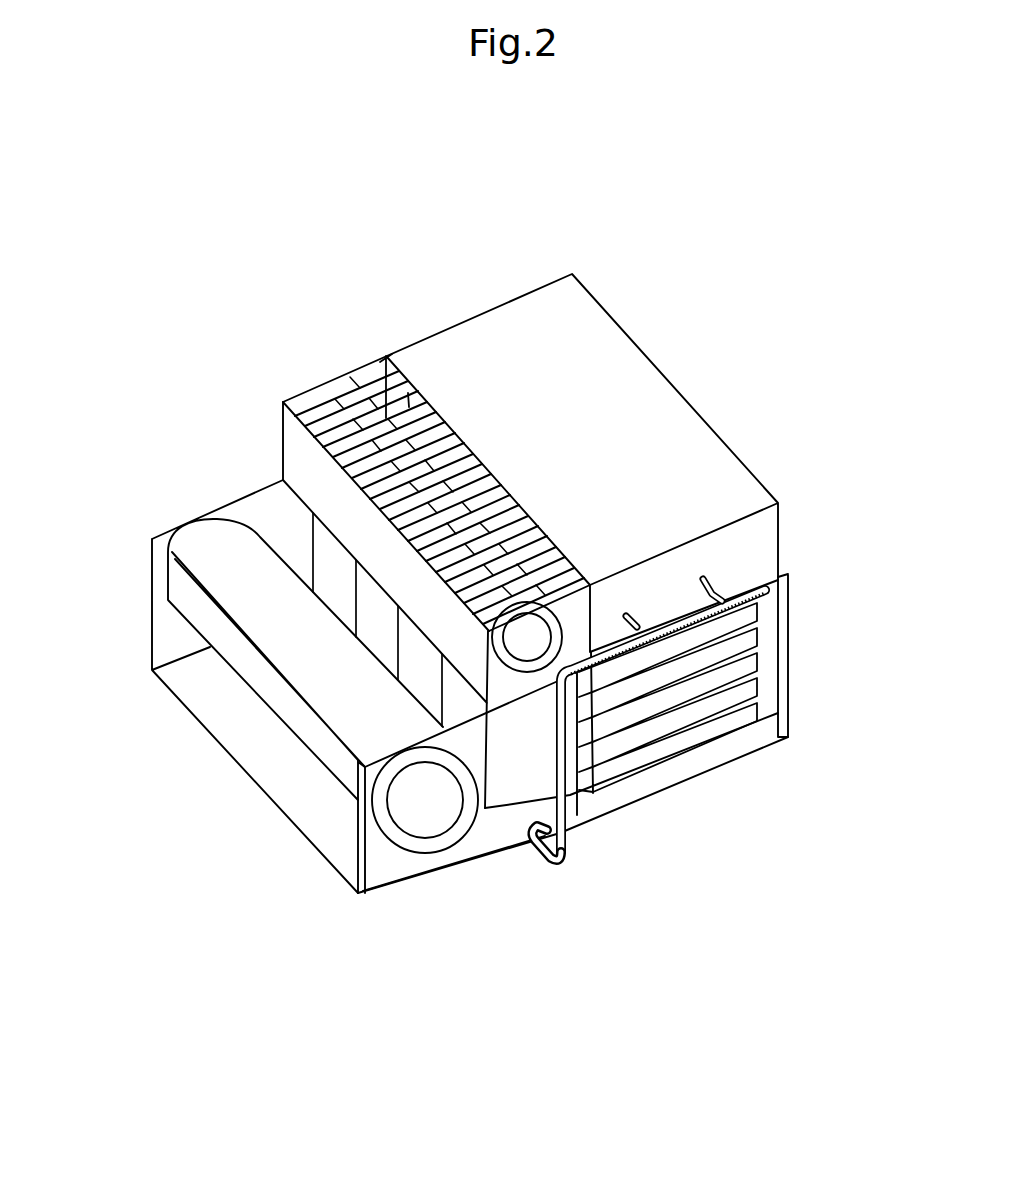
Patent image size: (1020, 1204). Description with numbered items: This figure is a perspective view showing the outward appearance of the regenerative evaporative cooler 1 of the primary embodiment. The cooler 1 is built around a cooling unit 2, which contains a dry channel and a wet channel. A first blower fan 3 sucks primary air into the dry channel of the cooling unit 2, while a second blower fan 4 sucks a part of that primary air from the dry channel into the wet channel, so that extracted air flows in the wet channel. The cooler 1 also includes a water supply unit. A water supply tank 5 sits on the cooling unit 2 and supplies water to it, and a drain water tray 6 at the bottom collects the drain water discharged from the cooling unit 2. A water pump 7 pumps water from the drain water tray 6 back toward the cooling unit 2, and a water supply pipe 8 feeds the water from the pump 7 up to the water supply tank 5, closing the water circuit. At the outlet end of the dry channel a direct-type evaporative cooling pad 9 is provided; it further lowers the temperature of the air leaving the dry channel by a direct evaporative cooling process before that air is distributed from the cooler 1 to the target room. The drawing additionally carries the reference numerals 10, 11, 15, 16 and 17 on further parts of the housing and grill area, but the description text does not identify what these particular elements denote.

The regenerative evaporative cooler 1 is at (136, 379).
The cooling unit 2 is at (750, 782).
The first blower fan 3 is at (447, 827).
The second blower fan 4 is at (530, 653).
The water supply tank 5 is at (628, 358).
The drain water tray 6 is at (685, 773).
The water pump 7 is at (577, 817).
The water supply pipe 8 is at (597, 790).
The direct-type evaporative cooling pad 9 is at (763, 682).
The front panel 10 is at (363, 847).
The air outlet grill 11 is at (348, 390).
The duct housing 15 is at (205, 680).
The side panel 16 is at (790, 655).
The clip 17 is at (406, 403).